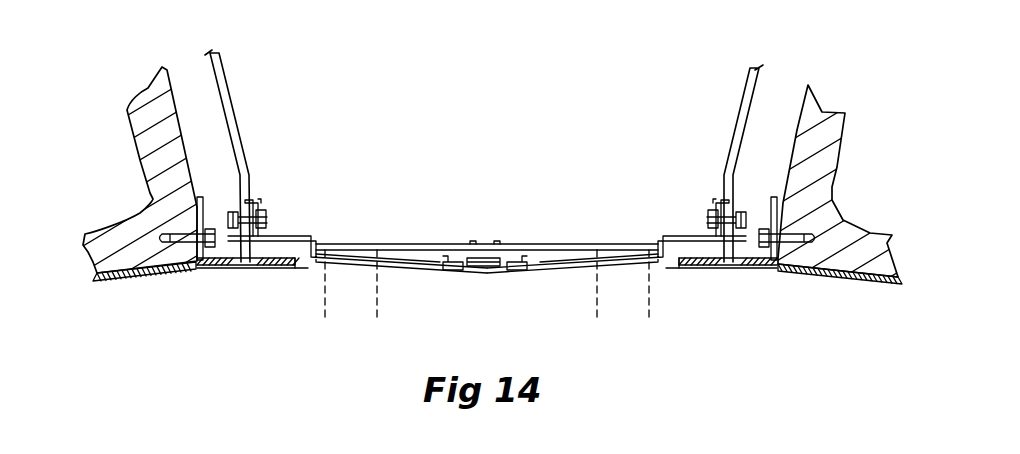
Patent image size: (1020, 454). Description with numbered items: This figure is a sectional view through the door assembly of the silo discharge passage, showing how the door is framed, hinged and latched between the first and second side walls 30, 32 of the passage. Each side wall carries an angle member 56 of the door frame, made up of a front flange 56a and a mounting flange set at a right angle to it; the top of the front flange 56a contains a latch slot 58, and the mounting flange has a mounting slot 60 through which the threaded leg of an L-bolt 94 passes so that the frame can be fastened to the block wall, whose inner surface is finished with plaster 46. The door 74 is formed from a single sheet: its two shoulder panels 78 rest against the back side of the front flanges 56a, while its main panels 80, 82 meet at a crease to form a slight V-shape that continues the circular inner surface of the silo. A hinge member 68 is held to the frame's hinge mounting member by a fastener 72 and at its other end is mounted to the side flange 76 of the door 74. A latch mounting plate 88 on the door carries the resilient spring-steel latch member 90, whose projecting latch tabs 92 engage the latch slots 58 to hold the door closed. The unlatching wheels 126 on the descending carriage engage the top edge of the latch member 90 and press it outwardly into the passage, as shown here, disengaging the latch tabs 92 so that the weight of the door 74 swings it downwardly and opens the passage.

The first side wall 30 is at (168, 70).
The second side wall 32 is at (806, 86).
The plaster 46 is at (138, 283).
The angle member 56 is at (753, 303).
The front flange 56a is at (257, 269).
The latch slot 58 is at (236, 266).
The mounting slot 60 is at (200, 211).
The hinge member 68 is at (238, 101).
The fastener 72 is at (263, 222).
The door 74 is at (402, 303).
The side flange 76 is at (254, 203).
The shoulder panel 78 is at (292, 266).
The main panel 80 is at (417, 256).
The main panel 82 is at (568, 260).
The latch mounting plate 88 is at (466, 260).
The latch member 90 is at (413, 239).
The latch tab 92 is at (213, 266).
The L-bolt 94 is at (154, 227).
The unlatching wheel 126 is at (326, 300).